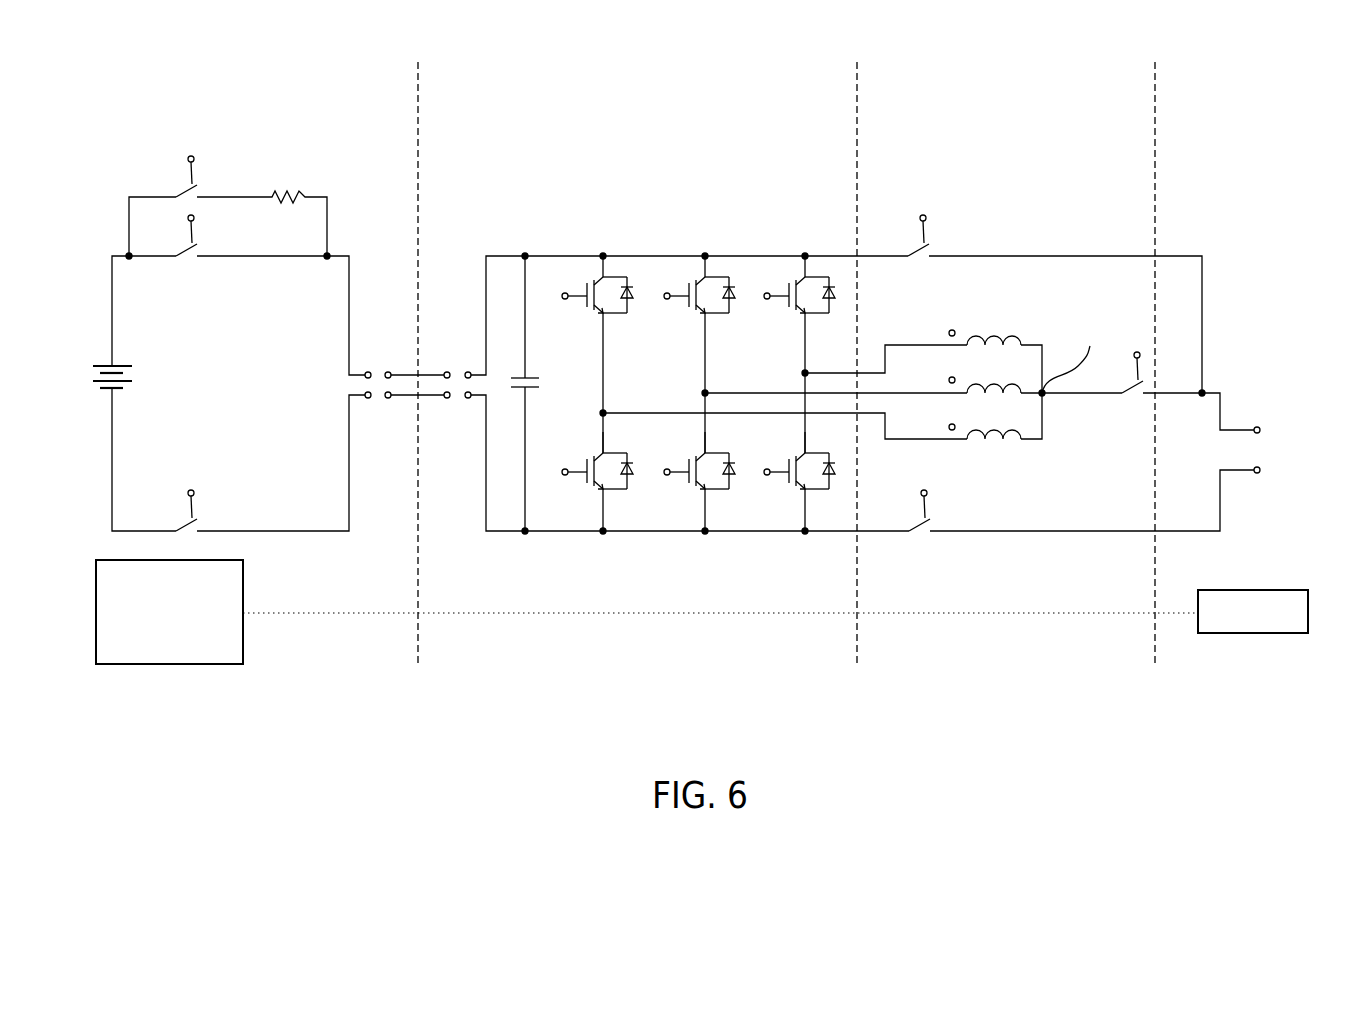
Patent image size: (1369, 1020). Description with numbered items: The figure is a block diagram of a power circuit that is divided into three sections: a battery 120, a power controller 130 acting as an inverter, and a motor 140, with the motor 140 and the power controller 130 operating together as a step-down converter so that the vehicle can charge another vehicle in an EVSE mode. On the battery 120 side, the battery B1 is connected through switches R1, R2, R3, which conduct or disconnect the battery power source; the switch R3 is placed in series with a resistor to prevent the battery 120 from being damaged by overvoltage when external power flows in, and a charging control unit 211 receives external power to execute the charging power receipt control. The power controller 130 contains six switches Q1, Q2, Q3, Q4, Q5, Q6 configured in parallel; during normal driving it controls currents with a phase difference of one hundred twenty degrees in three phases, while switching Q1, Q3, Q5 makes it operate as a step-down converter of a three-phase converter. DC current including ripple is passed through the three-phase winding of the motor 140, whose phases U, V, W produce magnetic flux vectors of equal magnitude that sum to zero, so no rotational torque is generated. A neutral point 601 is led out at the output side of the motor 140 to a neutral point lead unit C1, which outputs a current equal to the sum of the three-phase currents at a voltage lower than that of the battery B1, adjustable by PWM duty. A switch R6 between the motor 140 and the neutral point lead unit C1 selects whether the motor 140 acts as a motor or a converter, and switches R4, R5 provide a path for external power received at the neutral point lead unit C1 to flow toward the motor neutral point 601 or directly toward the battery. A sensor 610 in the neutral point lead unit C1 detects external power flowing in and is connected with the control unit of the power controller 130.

The battery 120 is at (232, 294).
The power controller 130 is at (718, 295).
The motor 140 is at (1090, 313).
The charging control unit 211 is at (153, 664).
The neutral point 601 is at (1079, 360).
The sensor 610 is at (1253, 633).
The battery B1 is at (133, 377).
The switch R1 is at (193, 258).
The switch R2 is at (193, 491).
The switch R3 is at (228, 206).
The switch R4 is at (926, 529).
The switch R5 is at (926, 255).
The switch R6 is at (1138, 389).
The switch Q1 is at (590, 301).
The switch Q2 is at (590, 480).
The switch Q3 is at (693, 301).
The switch Q4 is at (693, 480).
The switch Q5 is at (794, 301).
The switch Q6 is at (794, 480).
The neutral point lead unit C1 is at (1255, 430).
The phase U is at (985, 324).
The phase V is at (985, 370).
The phase W is at (985, 418).